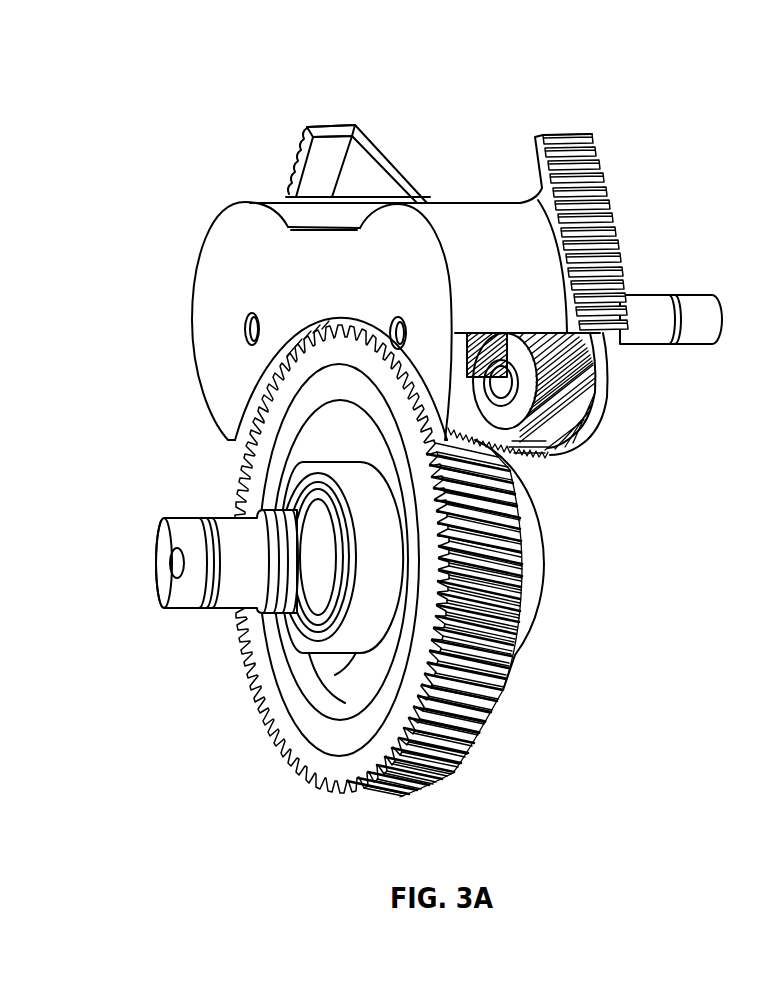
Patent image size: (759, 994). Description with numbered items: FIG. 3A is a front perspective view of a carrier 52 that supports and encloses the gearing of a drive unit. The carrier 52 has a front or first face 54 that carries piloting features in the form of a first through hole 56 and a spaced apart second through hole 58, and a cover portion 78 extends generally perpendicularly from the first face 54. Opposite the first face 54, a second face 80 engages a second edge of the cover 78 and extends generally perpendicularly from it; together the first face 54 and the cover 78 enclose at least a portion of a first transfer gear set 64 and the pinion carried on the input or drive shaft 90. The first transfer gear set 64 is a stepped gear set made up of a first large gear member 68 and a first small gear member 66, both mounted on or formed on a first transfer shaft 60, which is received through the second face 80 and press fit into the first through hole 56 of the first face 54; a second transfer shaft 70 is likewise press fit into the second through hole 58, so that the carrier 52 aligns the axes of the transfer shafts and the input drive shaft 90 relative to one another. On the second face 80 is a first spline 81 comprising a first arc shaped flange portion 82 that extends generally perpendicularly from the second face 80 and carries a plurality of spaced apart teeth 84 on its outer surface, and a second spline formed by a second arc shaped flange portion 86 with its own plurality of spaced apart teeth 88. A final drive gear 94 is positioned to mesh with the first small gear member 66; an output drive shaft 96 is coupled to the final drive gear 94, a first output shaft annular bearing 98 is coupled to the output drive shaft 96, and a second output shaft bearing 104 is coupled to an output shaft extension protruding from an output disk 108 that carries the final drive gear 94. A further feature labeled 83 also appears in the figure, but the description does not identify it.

The carrier 52 is at (288, 195).
The first face 54 is at (215, 395).
The first through hole 56 is at (392, 318).
The second through hole 58 is at (248, 320).
The first transfer shaft 60 is at (388, 332).
The first transfer gear set 64 is at (546, 465).
The first small gear member 66 is at (497, 343).
The first large gear member 68 is at (567, 413).
The second transfer shaft 70 is at (247, 328).
The cover portion 78 is at (452, 225).
The second face 80 is at (376, 148).
The first spline 81 is at (316, 118).
The first arc shaped flange portion 82 is at (334, 125).
The drive gear 83 is at (546, 120).
The spaced apart teeth 84 is at (302, 142).
The second arc shaped flange portion 86 is at (534, 143).
The spaced apart teeth 88 is at (573, 140).
The input drive shaft 90 is at (697, 300).
The final drive gear 94 is at (497, 534).
The output drive shaft 96 is at (225, 592).
The first output shaft annular bearing 98 is at (361, 632).
The second output shaft bearing 104 is at (530, 593).
The output disk 108 is at (383, 690).